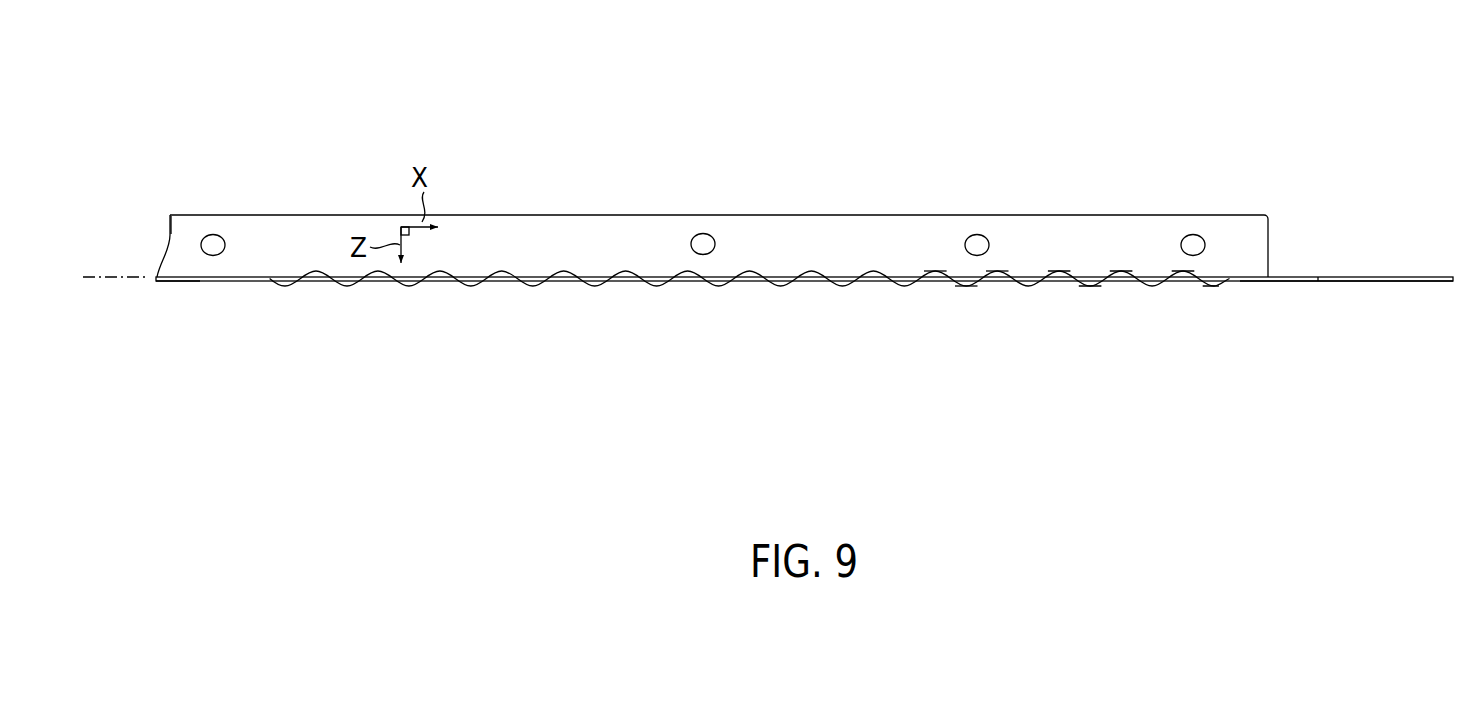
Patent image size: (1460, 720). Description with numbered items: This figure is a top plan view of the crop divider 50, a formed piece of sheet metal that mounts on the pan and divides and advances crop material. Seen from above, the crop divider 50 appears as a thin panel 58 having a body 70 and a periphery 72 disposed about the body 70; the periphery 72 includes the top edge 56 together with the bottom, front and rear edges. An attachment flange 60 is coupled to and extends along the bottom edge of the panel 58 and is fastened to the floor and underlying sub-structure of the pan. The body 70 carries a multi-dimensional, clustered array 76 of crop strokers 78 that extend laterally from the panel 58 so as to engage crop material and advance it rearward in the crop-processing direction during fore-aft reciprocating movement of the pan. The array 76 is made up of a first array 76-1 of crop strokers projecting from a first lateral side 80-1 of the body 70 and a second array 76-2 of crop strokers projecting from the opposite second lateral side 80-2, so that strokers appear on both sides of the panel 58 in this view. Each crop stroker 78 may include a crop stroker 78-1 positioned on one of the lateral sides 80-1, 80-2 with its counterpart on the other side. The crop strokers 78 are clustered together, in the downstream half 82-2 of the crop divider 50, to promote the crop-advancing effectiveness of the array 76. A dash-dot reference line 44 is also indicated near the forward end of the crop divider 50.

The crop divider 50 is at (307, 87).
The reference plane 44 is at (112, 277).
The top edge 56 is at (1295, 283).
The panel 58 is at (1283, 277).
The attachment flange 60 is at (1228, 225).
The body 70 is at (1248, 277).
The periphery 72 is at (1330, 283).
The clustered array 76 is at (898, 293).
The first array 76-1 is at (1000, 262).
The second array 76-2 is at (972, 302).
The crop stroker 78 is at (1063, 271).
The crop stroker 78-1 is at (1178, 273).
The first lateral side 80-1 is at (177, 277).
The second lateral side 80-2 is at (185, 282).
The downstream half 82-2 is at (930, 283).